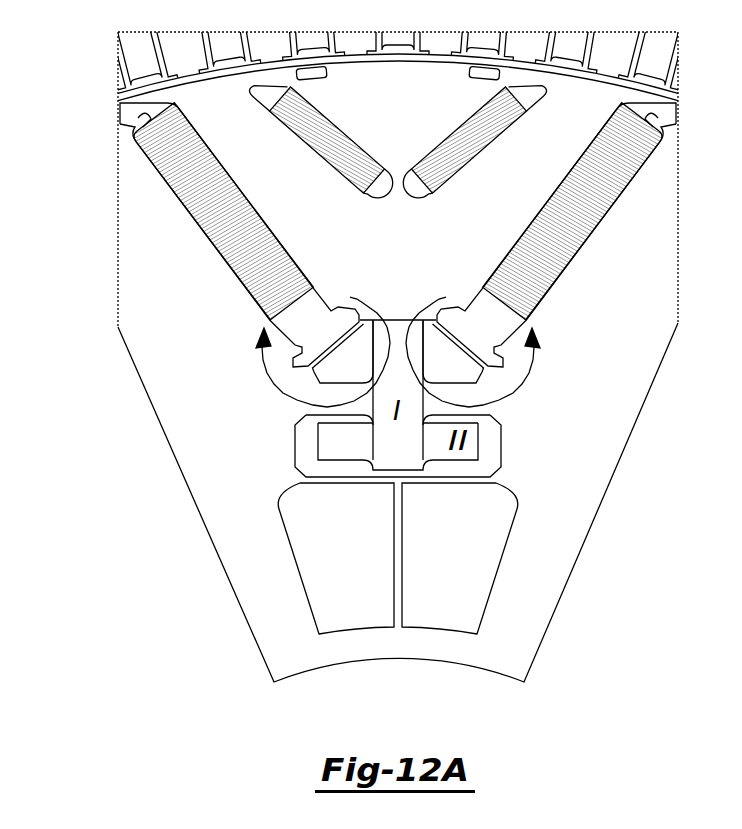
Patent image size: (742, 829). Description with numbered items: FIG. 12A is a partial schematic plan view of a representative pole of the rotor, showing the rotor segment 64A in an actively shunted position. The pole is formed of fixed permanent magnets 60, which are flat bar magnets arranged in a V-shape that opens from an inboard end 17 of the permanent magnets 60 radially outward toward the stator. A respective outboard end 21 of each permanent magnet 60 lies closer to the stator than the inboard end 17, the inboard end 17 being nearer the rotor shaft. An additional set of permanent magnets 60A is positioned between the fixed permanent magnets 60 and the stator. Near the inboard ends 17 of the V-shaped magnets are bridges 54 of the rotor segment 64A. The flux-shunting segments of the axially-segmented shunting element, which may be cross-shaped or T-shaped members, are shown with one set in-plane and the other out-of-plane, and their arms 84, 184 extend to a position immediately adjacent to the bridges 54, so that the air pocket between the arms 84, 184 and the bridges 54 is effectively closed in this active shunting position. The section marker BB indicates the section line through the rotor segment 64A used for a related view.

The outboard end 21 is at (138, 118).
The permanent magnets 60 is at (213, 224).
The additional permanent magnets 60A is at (324, 142).
The inboard end 17 is at (272, 327).
The bridges 54 is at (308, 369).
The center barrier region BB is at (307, 377).
The arm 84 is at (310, 428).
The arm 184 is at (310, 463).
The rotor segment 64A is at (627, 334).